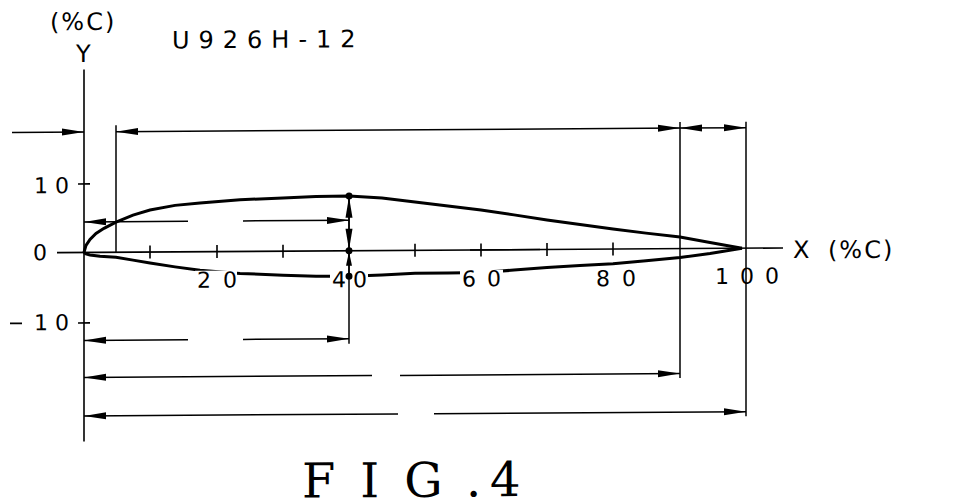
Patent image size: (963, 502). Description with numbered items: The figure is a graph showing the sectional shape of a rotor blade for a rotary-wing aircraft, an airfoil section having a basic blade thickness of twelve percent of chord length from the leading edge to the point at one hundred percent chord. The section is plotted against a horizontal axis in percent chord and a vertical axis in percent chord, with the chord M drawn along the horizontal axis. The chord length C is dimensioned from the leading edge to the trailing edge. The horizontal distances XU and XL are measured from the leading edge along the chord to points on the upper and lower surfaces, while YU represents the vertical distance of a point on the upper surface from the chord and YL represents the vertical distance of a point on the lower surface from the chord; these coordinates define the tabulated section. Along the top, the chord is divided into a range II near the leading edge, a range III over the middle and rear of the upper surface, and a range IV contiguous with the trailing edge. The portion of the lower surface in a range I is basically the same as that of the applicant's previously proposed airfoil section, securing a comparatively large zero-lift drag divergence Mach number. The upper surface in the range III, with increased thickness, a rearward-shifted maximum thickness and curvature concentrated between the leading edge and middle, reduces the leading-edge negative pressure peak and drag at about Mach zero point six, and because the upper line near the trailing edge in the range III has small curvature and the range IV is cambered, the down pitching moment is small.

The leading edge range II is at (112, 114).
The upper surface range III is at (436, 116).
The trailing edge range IV is at (724, 85).
The horizontal distance on the upper surface XU is at (216, 222).
The vertical distance of upper surface point YU is at (351, 230).
The horizontal distance on the lower surface XL is at (216, 341).
The vertical distance of lower surface point YL is at (356, 263).
The lower surface range I is at (382, 374).
The chord length C is at (415, 411).
The chord M is at (504, 255).